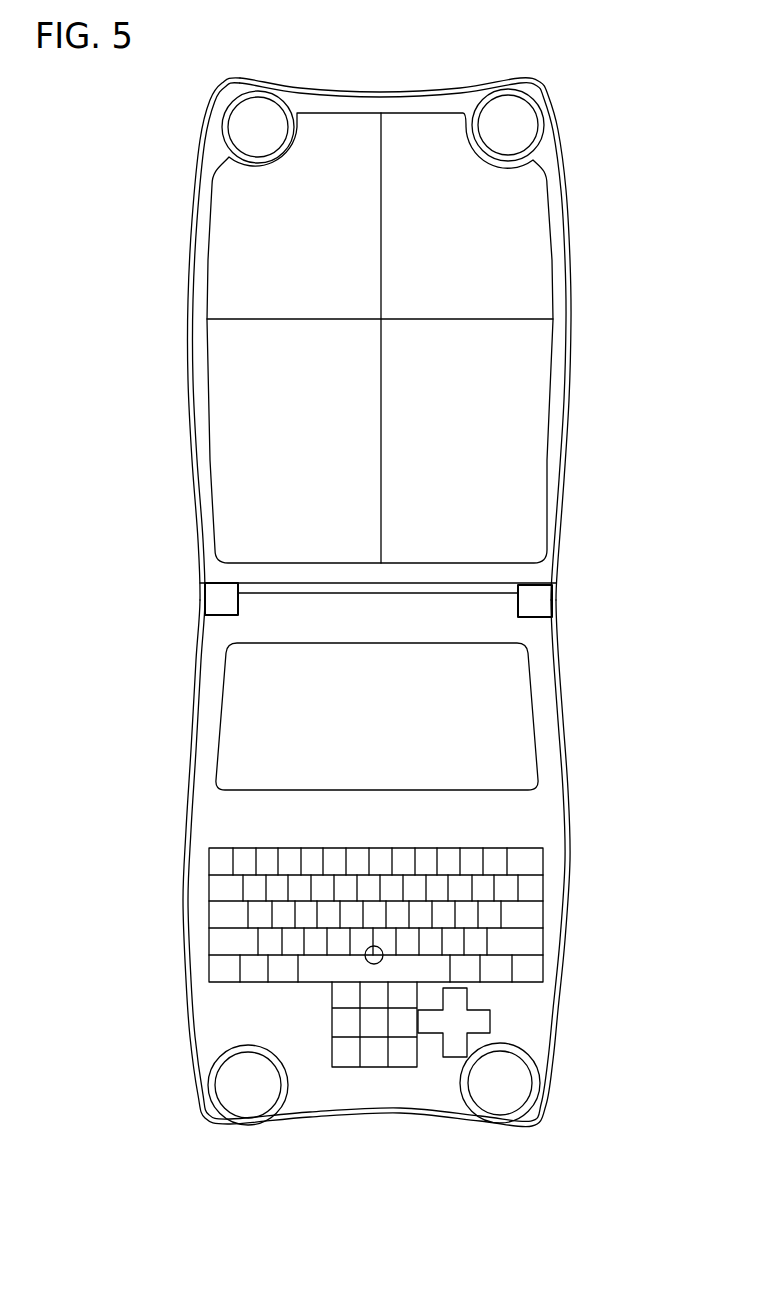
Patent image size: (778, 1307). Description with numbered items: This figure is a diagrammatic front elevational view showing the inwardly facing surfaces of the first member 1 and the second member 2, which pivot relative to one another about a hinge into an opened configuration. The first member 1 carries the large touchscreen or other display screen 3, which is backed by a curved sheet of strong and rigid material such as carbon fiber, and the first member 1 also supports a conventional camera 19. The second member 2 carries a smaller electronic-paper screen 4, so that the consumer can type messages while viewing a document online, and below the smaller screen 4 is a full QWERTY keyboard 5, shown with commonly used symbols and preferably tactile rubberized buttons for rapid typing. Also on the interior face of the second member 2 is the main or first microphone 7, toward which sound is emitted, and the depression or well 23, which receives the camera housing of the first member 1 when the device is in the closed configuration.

The first member 1 is at (190, 318).
The second member 2 is at (397, 1115).
The display screen 3 is at (527, 388).
The electronic-paper screen 4 is at (525, 710).
The QWERTY keyboard 5 is at (530, 843).
The first microphone 7 is at (387, 962).
The camera 19 is at (233, 128).
The well 23 is at (218, 1092).